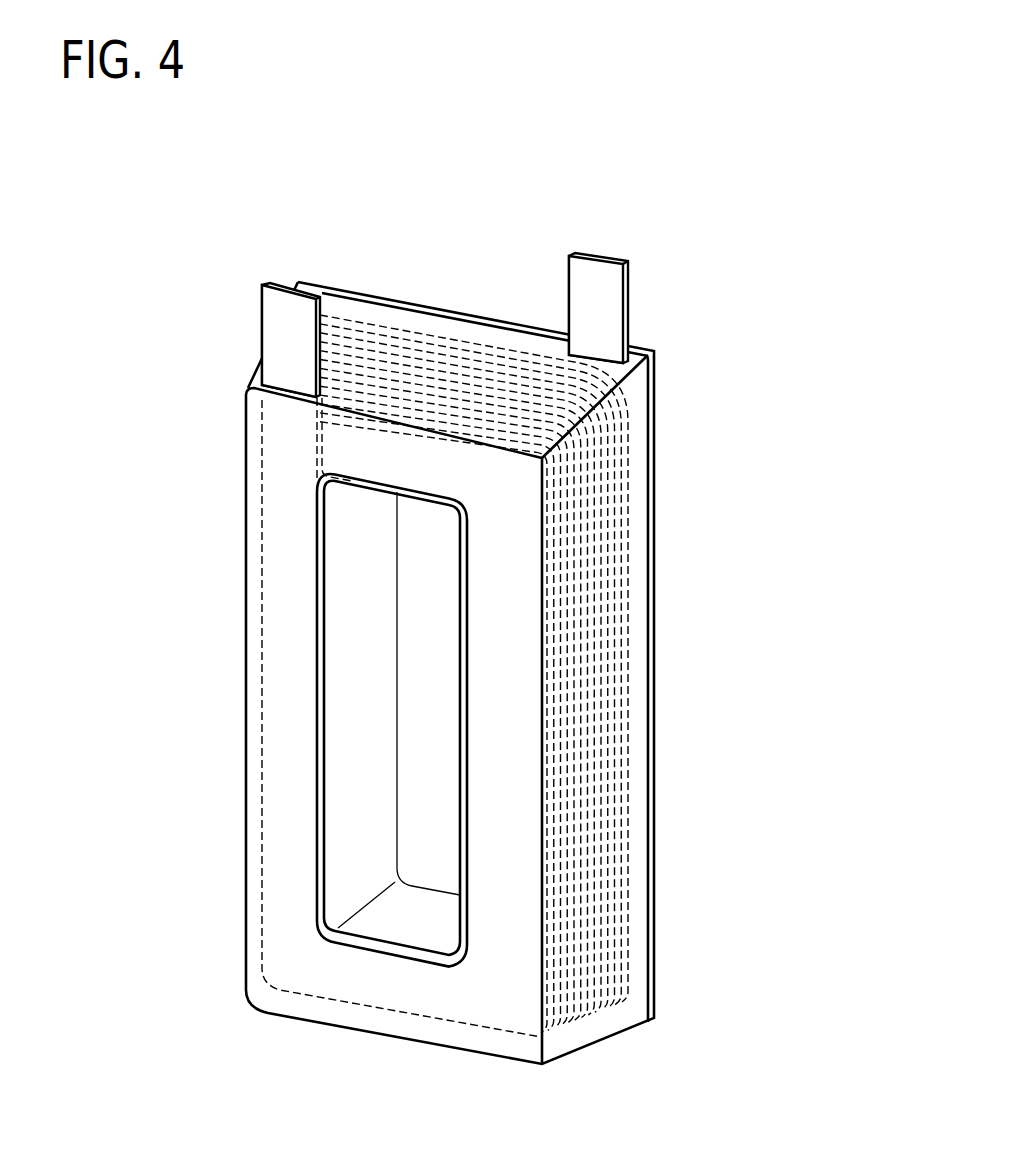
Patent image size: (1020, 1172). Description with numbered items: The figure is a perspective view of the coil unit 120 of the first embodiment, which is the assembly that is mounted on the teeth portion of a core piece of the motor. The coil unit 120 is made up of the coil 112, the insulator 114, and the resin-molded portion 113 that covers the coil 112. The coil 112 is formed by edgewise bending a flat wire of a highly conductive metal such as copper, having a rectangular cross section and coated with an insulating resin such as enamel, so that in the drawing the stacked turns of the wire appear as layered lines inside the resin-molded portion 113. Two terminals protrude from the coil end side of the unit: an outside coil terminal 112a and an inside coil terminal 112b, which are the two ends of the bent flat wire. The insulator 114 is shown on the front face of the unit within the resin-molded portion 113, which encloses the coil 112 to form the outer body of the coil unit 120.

The coil 112 is at (623, 635).
The outside coil terminal 112a is at (603, 302).
The inside coil terminal 112b is at (280, 345).
The resin-molded portion 113 is at (283, 718).
The insulator 114 is at (463, 577).
The coil unit 120 is at (668, 1130).